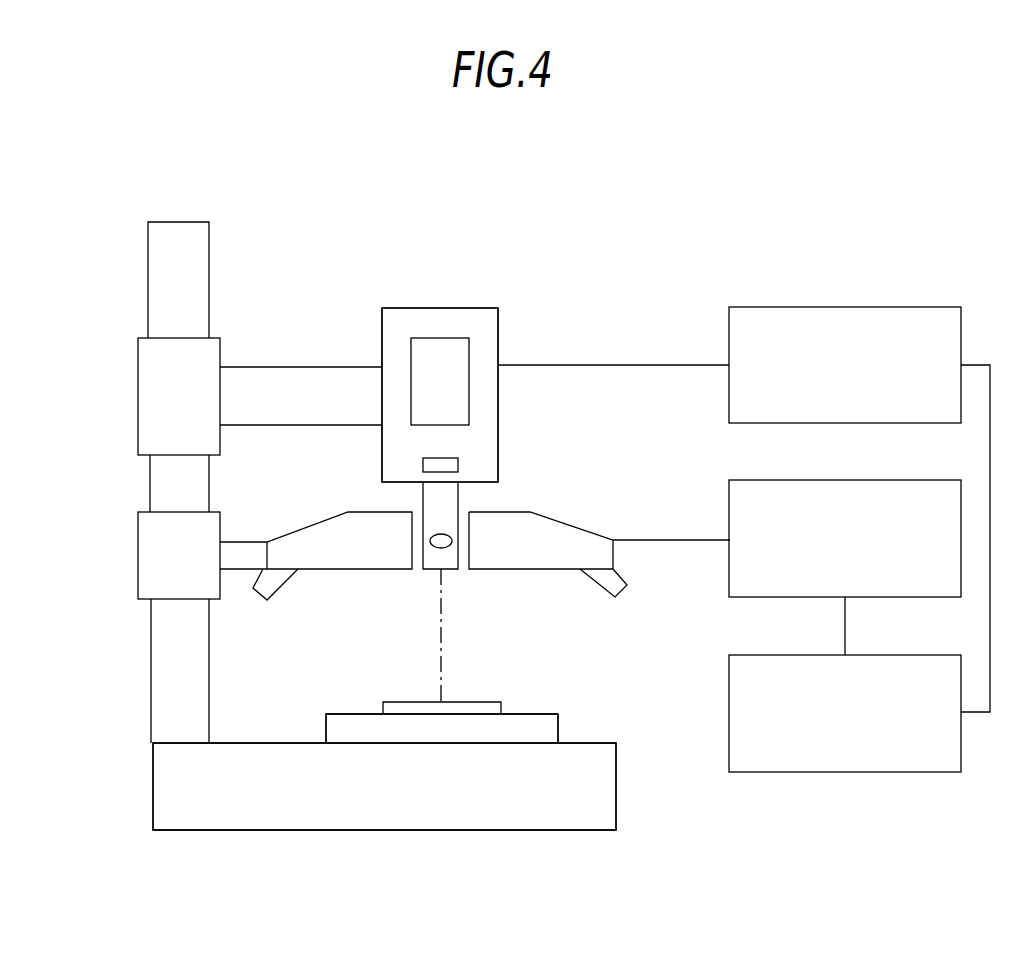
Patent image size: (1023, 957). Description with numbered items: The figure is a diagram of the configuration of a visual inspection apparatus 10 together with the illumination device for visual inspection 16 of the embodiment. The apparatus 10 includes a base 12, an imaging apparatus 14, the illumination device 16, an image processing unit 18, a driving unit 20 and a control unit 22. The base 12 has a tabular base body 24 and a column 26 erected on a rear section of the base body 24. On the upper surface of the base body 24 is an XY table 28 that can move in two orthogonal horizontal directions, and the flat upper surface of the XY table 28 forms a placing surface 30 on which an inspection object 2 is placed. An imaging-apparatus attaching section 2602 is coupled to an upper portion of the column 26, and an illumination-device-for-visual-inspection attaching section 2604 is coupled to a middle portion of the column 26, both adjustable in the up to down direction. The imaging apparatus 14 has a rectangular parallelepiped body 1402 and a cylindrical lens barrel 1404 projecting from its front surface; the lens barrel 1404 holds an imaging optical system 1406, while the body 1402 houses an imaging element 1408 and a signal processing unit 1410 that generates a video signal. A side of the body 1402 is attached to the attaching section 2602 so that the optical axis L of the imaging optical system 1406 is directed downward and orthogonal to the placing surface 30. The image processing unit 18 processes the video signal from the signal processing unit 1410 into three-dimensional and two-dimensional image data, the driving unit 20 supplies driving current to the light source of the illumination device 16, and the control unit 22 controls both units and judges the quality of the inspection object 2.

The visual inspection apparatus 10 is at (630, 176).
The base 12 is at (396, 848).
The imaging apparatus 14 is at (498, 333).
The body 1402 is at (498, 333).
The lens barrel 1404 is at (458, 505).
The imaging optical system 1406 is at (441, 548).
The imaging element 1408 is at (452, 458).
The signal processing unit 1410 is at (469, 358).
The illumination device for visual inspection 16 is at (350, 510).
The image processing unit 18 is at (888, 307).
The driving unit 20 is at (888, 481).
The control unit 22 is at (898, 655).
The base body 24 is at (492, 817).
The column 26 is at (150, 651).
The imaging-apparatus attaching section 2602 is at (138, 364).
The illumination-device-for-visual-inspection attaching section 2604 is at (139, 546).
The XY table 28 is at (540, 700).
The placing surface 30 is at (540, 700).
The inspection object 2 is at (472, 700).
The optical axis L is at (440, 623).